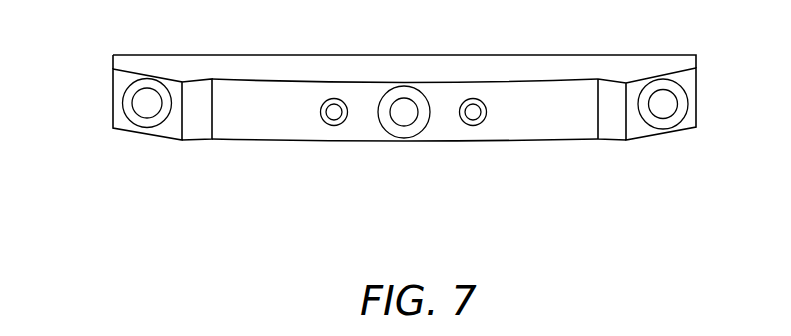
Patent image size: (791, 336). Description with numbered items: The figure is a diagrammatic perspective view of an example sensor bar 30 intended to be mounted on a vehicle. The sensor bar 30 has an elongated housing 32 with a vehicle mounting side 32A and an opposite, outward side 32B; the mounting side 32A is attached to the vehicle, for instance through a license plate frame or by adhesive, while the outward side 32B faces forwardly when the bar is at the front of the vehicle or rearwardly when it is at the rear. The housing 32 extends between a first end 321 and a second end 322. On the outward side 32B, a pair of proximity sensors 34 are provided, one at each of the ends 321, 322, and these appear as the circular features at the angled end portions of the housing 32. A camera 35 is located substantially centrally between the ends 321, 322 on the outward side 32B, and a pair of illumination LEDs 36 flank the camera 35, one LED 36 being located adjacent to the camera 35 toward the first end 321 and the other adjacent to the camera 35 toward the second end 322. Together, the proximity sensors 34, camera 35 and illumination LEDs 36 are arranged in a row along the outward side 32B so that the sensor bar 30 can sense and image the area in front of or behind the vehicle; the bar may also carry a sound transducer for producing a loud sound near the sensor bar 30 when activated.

The sensor bar 30 is at (398, 126).
The housing 32 is at (398, 126).
The vehicle mounting side 32A is at (278, 55).
The outward side 32B is at (267, 119).
The first end 321 is at (113, 69).
The second end 322 is at (697, 82).
The proximity sensor 34 is at (130, 128).
The camera 35 is at (414, 136).
The illumination LED 36 is at (335, 126).